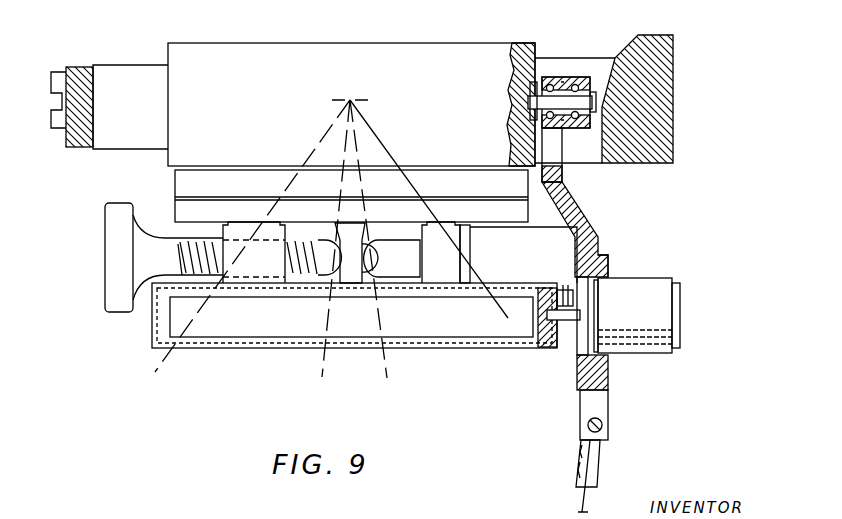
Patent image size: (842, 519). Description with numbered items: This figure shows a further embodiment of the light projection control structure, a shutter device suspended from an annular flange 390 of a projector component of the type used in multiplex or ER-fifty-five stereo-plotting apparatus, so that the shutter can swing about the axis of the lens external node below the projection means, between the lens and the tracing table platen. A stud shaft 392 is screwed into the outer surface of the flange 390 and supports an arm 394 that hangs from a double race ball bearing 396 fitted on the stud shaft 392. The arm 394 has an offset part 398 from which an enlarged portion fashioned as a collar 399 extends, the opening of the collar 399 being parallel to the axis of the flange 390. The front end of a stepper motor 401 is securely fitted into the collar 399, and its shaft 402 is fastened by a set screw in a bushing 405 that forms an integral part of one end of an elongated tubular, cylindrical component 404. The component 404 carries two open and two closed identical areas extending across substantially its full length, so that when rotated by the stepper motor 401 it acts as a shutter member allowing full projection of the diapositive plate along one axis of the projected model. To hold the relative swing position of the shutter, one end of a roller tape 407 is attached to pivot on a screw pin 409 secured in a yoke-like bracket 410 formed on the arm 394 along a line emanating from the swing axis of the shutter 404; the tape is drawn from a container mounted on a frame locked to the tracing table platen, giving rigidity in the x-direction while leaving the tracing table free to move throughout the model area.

The annular flange 390 is at (333, 52).
The stud shaft 392 is at (562, 102).
The arm 394 is at (588, 234).
The double race ball bearing 396 is at (576, 84).
The offset part 398 is at (558, 188).
The collar 399 is at (607, 266).
The stepper motor 401 is at (648, 307).
The shaft 402 is at (548, 317).
The elongated tubular cylindrical component 404 is at (215, 358).
The bushing 405 is at (566, 300).
The roller tape 407 is at (600, 471).
The screw pin 409 is at (588, 425).
The yoke-like bracket 410 is at (598, 408).